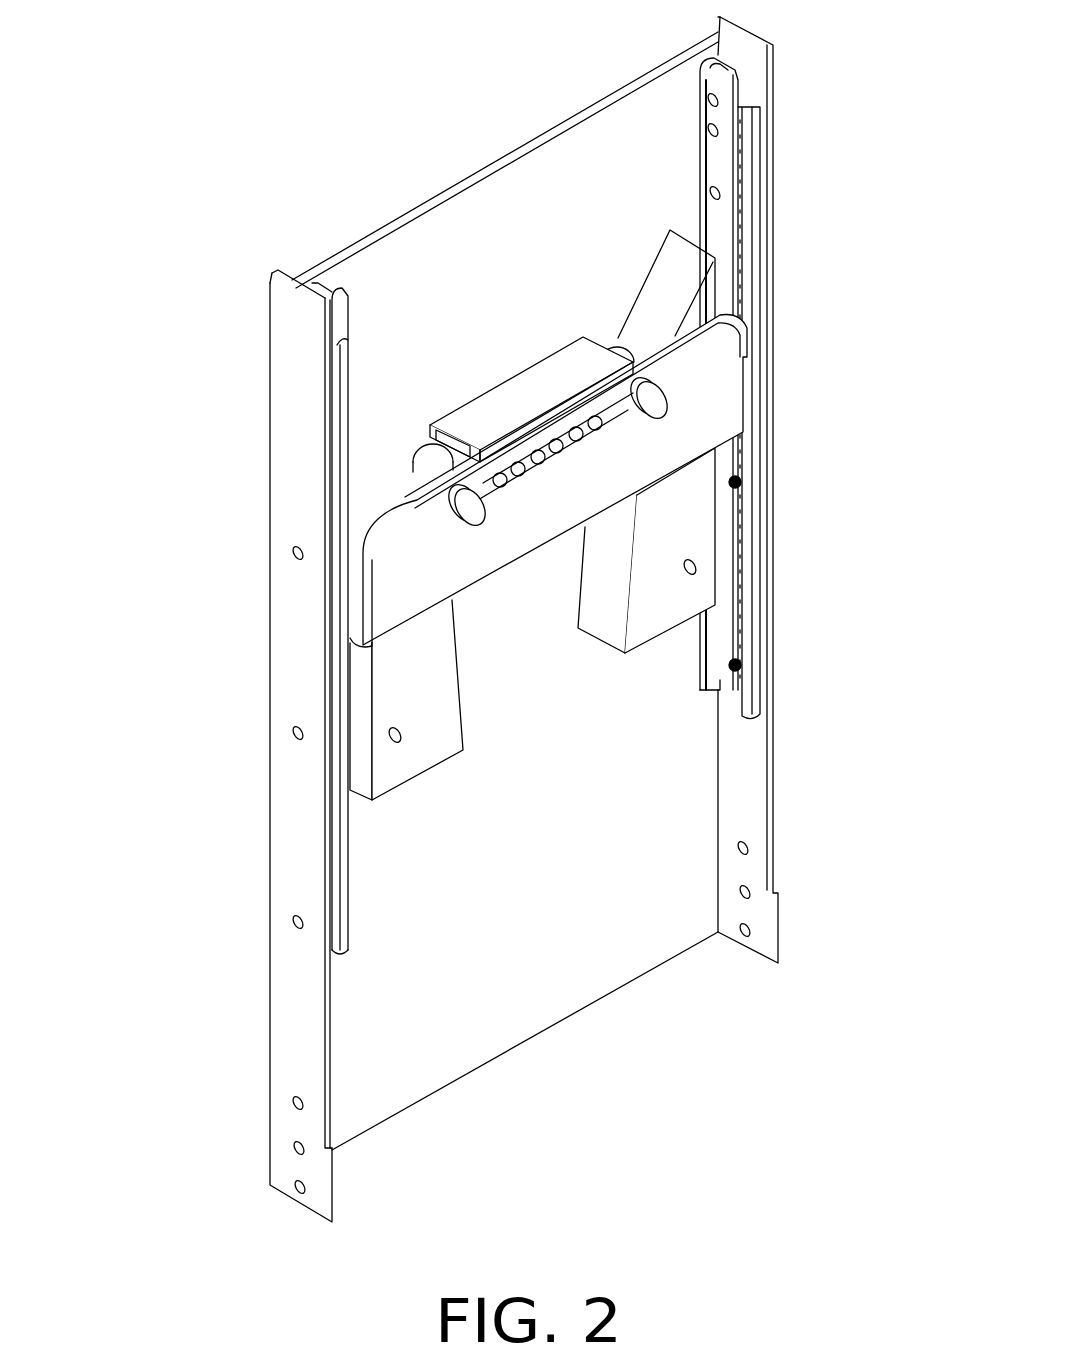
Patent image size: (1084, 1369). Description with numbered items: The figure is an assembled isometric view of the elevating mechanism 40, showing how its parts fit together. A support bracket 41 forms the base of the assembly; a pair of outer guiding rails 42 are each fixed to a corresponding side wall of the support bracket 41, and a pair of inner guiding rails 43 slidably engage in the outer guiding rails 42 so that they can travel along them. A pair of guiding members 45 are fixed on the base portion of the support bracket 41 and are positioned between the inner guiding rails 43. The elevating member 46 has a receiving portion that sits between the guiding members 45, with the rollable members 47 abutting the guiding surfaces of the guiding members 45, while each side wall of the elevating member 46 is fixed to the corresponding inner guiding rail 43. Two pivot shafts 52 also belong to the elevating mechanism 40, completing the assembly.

The elevating mechanism 40 is at (455, 80).
The support bracket 41 is at (543, 982).
The outer guiding rail 42 is at (750, 177).
The inner guiding rail 43 is at (723, 88).
The guiding member 45 is at (693, 537).
The elevating member 46 is at (713, 415).
The rollable member 47 is at (407, 472).
The pivot shaft 52 is at (447, 510).